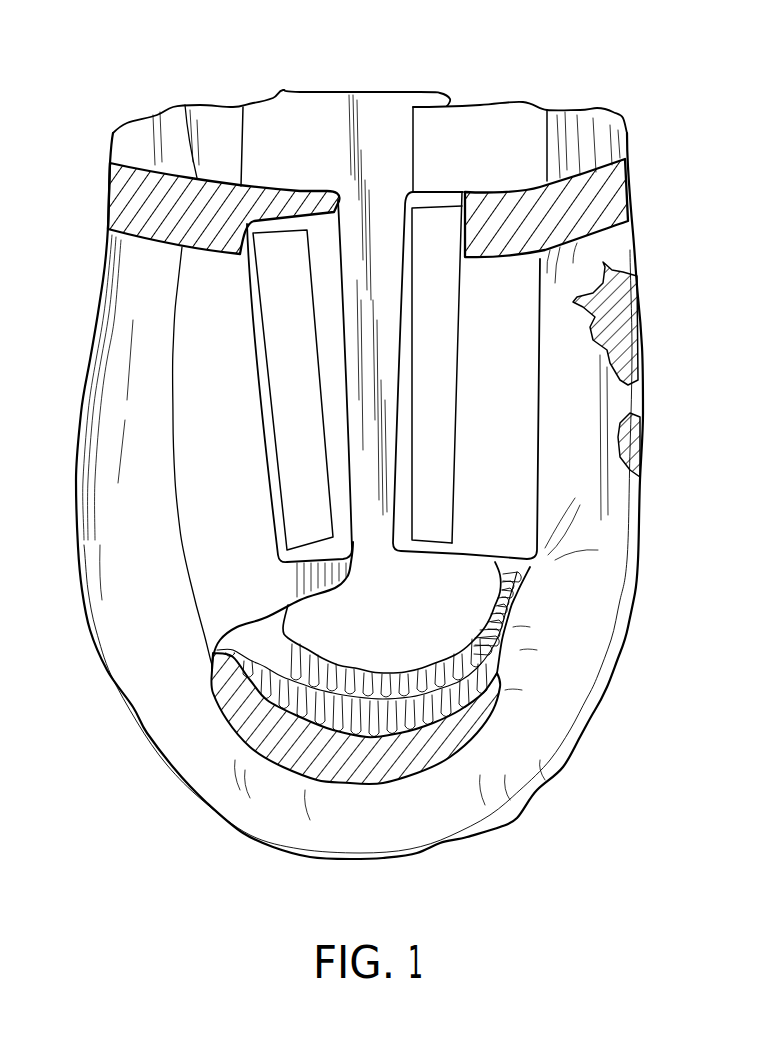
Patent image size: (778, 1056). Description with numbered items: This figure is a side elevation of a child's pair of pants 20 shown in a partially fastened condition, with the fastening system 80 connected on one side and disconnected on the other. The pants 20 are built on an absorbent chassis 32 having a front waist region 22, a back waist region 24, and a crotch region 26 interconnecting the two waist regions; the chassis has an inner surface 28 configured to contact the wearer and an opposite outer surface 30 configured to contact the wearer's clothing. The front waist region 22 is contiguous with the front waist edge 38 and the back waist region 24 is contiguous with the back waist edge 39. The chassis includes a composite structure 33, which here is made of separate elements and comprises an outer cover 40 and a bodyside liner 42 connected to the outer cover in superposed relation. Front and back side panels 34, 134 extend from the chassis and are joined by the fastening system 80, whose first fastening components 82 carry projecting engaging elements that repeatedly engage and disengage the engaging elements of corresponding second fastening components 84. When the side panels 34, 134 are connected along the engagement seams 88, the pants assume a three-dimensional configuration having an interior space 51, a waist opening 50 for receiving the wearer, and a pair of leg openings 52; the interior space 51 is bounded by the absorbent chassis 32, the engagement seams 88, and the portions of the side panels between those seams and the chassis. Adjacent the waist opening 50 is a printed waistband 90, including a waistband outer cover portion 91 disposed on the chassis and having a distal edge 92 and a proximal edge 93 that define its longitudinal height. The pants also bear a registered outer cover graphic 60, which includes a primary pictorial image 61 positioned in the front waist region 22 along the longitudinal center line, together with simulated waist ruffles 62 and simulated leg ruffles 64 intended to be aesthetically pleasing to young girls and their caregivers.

The pair of pants 20 is at (167, 103).
The front waist region 22 is at (602, 543).
The back waist region 24 is at (108, 478).
The crotch region 26 is at (254, 806).
The inner surface 28 is at (395, 165).
The outer surface 30 is at (600, 628).
The absorbent chassis 32 is at (123, 629).
The composite structure 33 is at (177, 757).
The side panel 34 is at (513, 120).
The front waist edge 38 is at (625, 122).
The back waist edge 39 is at (110, 143).
The outer cover 40 is at (583, 698).
The bodyside liner 42 is at (590, 123).
The waist opening 50 is at (377, 103).
The interior space 51 is at (315, 150).
The leg openings 52 is at (300, 625).
The registered outer cover graphic 60 is at (642, 260).
The primary pictorial image 61 is at (649, 327).
The simulated waist ruffles 62 is at (369, 199).
The simulated leg ruffles 64 is at (418, 790).
The fastening system 80 is at (305, 491).
The first fastening components 82 is at (273, 282).
The second fastening components 84 is at (435, 220).
The engagement seams 88 is at (441, 50).
The printed waistband 90 is at (628, 195).
The waistband outer cover portion 91 is at (98, 179).
The distal edge 92 is at (185, 108).
The proximal edge 93 is at (163, 248).
The side panel 134 is at (273, 110).